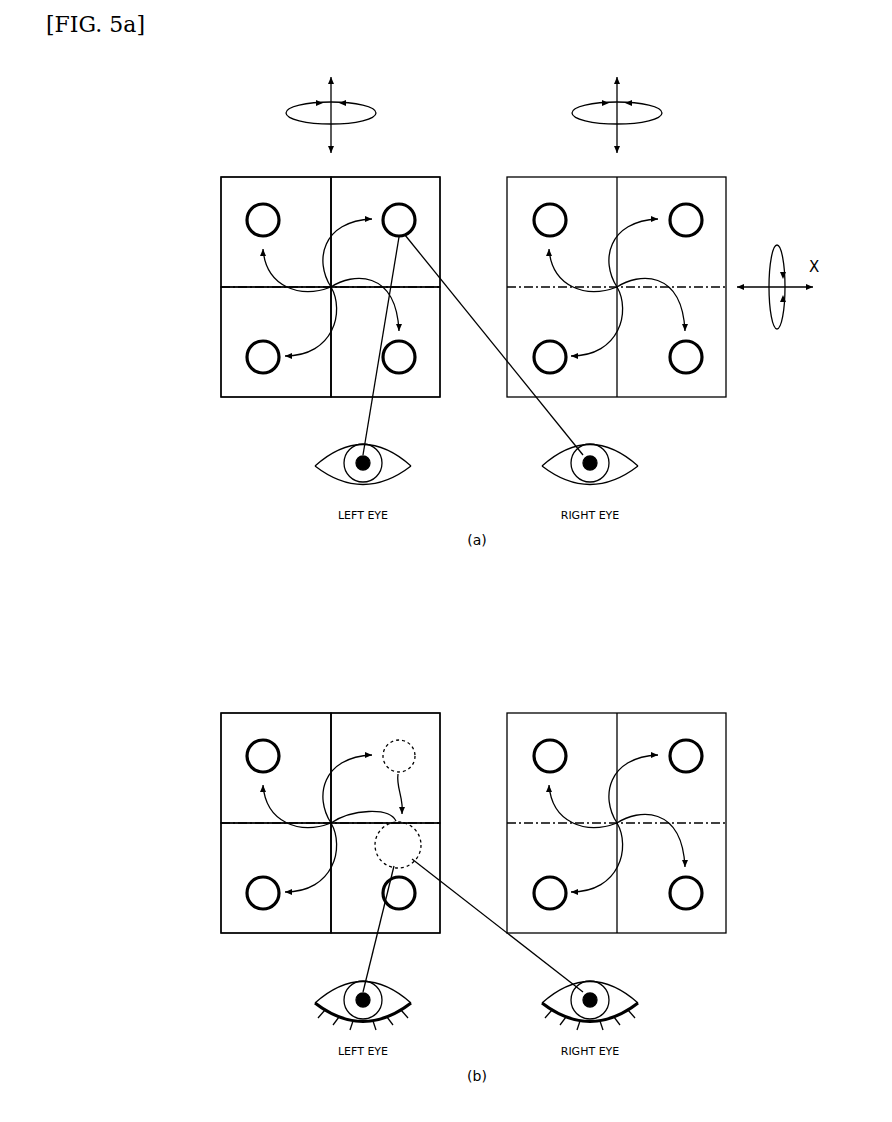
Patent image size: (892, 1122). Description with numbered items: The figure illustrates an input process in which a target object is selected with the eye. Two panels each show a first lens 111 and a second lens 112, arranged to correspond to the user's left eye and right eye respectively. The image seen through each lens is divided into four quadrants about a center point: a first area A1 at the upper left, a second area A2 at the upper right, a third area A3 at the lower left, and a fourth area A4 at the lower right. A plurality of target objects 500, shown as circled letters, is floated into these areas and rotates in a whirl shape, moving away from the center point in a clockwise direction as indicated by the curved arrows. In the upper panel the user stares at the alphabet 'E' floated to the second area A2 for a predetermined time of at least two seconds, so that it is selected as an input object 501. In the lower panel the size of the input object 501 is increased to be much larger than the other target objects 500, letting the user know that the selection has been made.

The first lens 111 is at (441, 177).
The second lens 112 is at (690, 177).
The target object 500 is at (246, 220).
The input object 501 is at (420, 827).
The first area A1 is at (256, 177).
The second area A2 is at (410, 177).
The third area A3 is at (258, 397).
The fourth area A4 is at (418, 397).